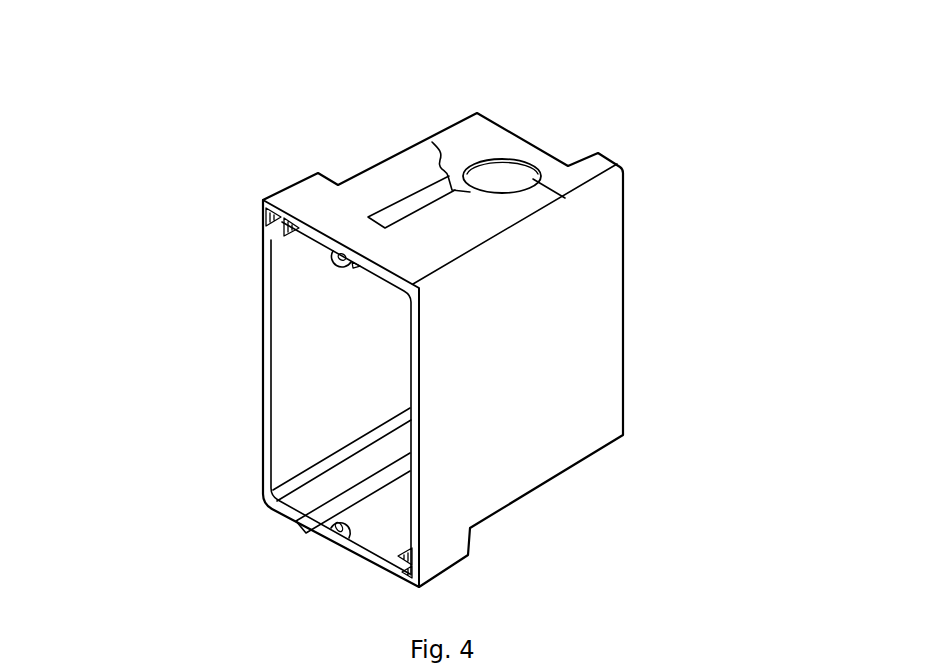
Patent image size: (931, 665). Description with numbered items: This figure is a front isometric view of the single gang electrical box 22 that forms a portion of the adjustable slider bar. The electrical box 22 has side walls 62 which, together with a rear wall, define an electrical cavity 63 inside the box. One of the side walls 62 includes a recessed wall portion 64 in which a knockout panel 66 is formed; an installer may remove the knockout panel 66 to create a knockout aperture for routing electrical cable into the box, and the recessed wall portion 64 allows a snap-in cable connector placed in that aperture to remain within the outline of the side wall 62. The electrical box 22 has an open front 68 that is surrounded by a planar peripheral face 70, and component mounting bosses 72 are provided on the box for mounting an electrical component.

The electrical box 22 is at (216, 168).
The side walls 62 is at (458, 248).
The electrical cavity 63 is at (303, 317).
The recessed wall portion 64 is at (470, 137).
The knockout panel 66 is at (503, 180).
The open front 68 is at (283, 452).
The planar peripheral face 70 is at (290, 509).
The component mounting bosses 72 is at (340, 533).